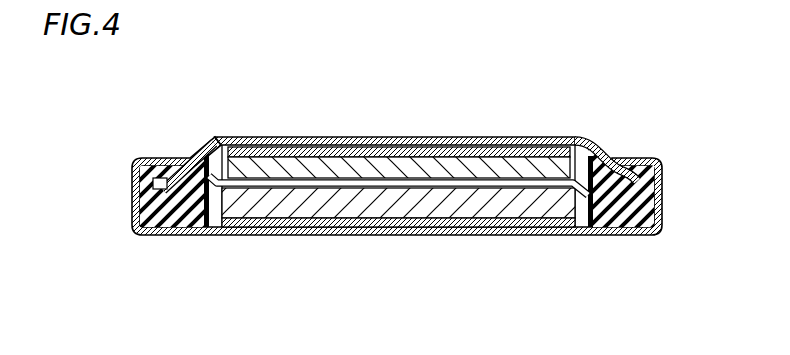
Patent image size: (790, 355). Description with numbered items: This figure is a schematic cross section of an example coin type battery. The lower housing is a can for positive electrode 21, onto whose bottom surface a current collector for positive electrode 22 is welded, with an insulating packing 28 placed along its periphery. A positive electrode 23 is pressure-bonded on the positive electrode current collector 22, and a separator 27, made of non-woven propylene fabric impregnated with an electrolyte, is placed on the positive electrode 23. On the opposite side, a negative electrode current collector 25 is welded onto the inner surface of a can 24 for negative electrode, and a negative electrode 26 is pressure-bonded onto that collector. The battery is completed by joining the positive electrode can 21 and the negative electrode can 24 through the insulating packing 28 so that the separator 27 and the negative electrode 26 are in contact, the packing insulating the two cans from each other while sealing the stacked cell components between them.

The can for positive electrode 21 is at (298, 233).
The current collector for positive electrode 22 is at (362, 222).
The positive electrode 23 is at (433, 208).
The can for negative electrode 24 is at (299, 140).
The negative electrode current collector 25 is at (362, 156).
The negative electrode 26 is at (433, 162).
The separator 27 is at (503, 184).
The insulating packing 28 is at (633, 160).